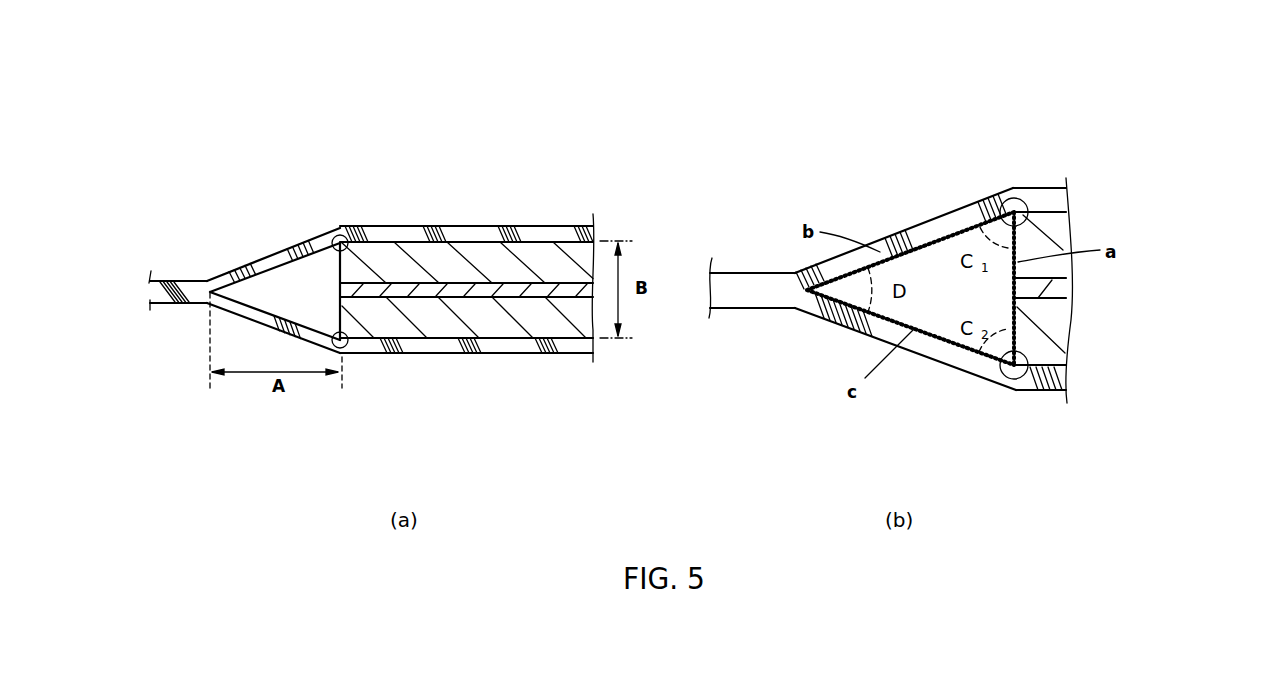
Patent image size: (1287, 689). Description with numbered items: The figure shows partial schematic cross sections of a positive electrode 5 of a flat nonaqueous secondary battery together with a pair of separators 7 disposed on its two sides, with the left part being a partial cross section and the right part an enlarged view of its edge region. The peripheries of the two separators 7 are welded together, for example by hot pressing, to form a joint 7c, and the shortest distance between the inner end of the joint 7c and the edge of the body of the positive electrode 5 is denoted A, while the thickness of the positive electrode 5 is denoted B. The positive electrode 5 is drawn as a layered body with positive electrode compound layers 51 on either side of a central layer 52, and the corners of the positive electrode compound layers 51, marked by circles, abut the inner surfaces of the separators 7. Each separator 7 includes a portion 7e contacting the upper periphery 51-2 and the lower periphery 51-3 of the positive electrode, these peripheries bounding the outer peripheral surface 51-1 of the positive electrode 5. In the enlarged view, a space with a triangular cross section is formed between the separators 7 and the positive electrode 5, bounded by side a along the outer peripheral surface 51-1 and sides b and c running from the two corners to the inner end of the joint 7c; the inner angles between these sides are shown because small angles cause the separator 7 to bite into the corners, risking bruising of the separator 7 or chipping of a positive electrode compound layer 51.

The positive electrode 5 is at (540, 242).
The separator 7 is at (303, 247).
The joint 7c is at (188, 280).
The portion contacting the upper and lower peripheries 7e is at (337, 228).
The positive electrode compound layer 51 is at (480, 248).
The intermediate layer 52 is at (403, 290).
The outer peripheral surface 51-1 is at (1020, 268).
The upper periphery 51-2 is at (1020, 200).
The lower periphery 51-3 is at (1025, 358).